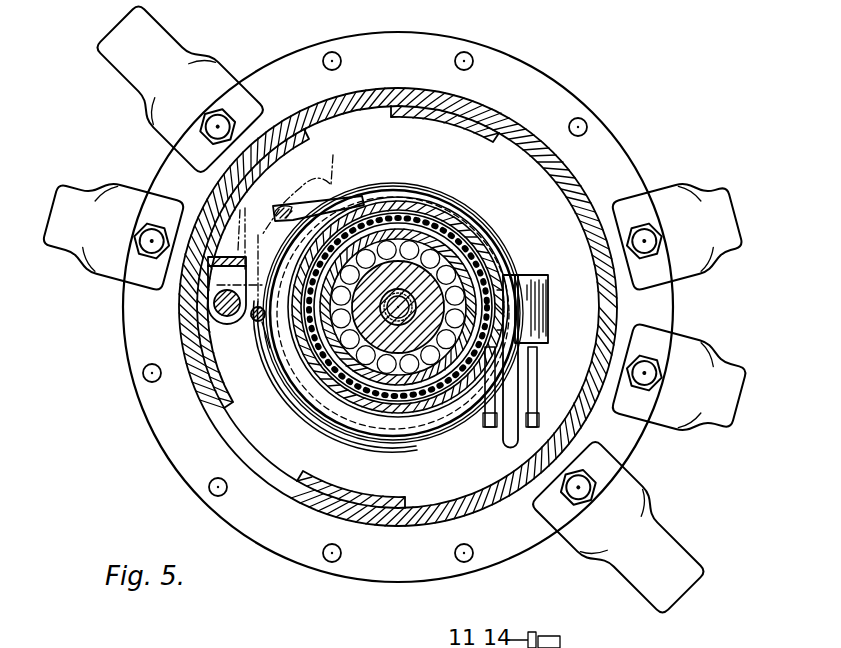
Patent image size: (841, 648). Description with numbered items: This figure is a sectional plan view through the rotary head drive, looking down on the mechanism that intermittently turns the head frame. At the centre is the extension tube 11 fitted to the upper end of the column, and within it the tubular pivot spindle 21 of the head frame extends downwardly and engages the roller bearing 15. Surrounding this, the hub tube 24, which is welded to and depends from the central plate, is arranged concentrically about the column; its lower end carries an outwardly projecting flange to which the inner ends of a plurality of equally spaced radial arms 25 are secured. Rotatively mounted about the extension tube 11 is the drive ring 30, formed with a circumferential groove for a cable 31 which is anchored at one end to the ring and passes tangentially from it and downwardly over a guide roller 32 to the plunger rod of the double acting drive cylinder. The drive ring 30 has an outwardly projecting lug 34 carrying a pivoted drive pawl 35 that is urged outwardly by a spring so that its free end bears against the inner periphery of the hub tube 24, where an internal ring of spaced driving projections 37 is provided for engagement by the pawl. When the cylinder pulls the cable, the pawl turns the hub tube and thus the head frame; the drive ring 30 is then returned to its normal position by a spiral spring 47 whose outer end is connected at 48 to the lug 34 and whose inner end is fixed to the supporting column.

The radial arms 25 is at (118, 190).
The driving projections 37 is at (470, 128).
The hub tube 24 is at (468, 505).
The drive ring 30 is at (388, 188).
The cable 31 is at (303, 217).
The lug 34 is at (303, 214).
The drive pawl 35 is at (220, 273).
The connection of spiral spring outer end to lug 48 is at (242, 332).
The spiral spring 47 is at (297, 407).
The guide roller 32 is at (500, 440).
The tubular pivot spindle 21 is at (368, 372).
The roller bearing 15 is at (395, 368).
The extension tube 11 is at (420, 372).